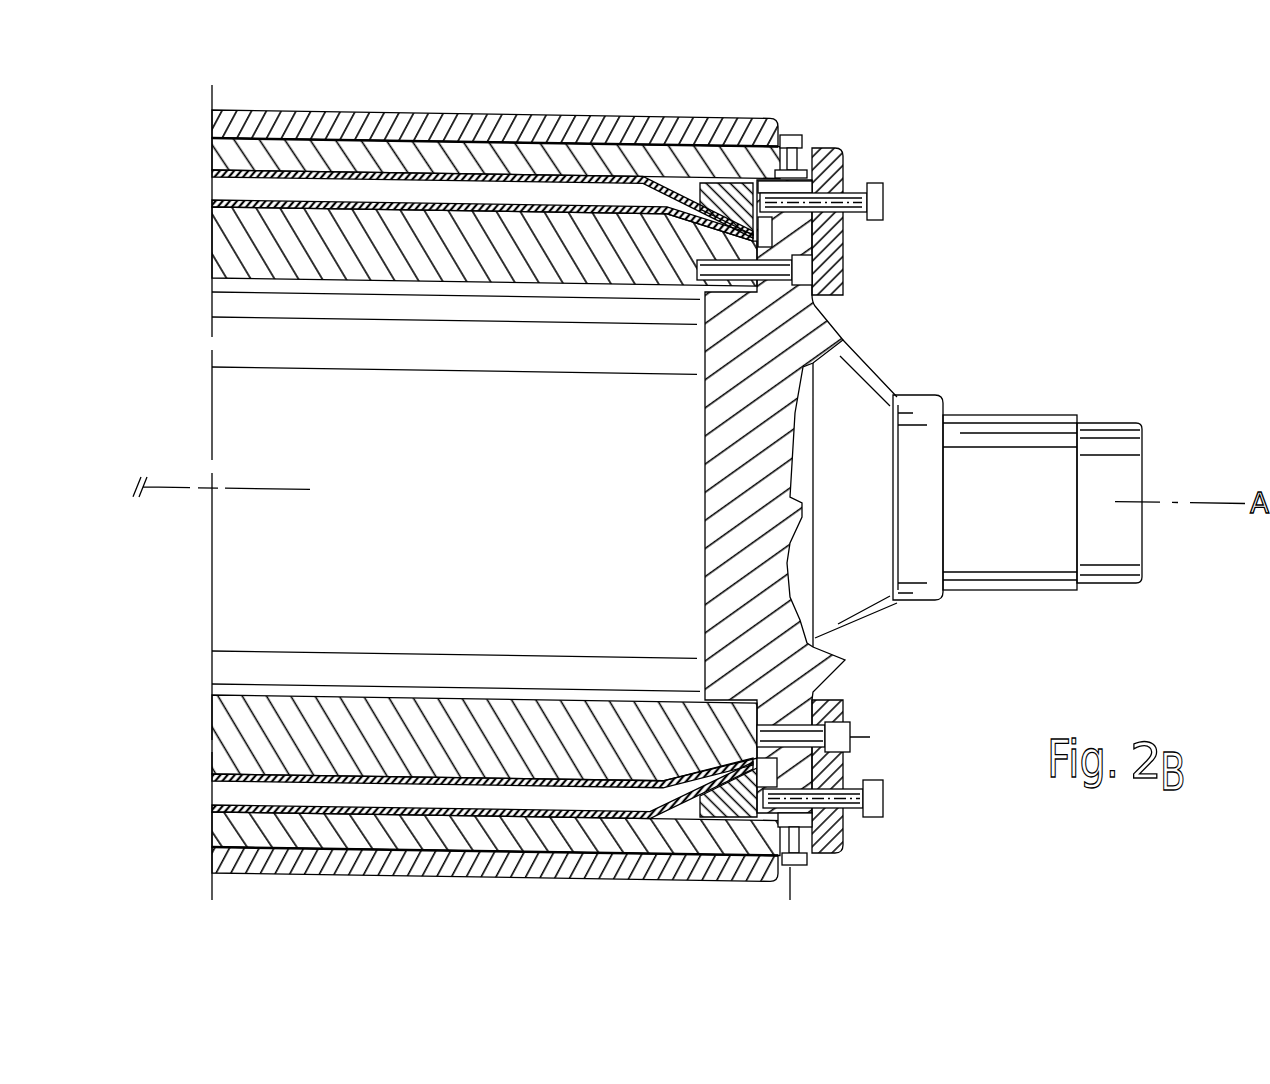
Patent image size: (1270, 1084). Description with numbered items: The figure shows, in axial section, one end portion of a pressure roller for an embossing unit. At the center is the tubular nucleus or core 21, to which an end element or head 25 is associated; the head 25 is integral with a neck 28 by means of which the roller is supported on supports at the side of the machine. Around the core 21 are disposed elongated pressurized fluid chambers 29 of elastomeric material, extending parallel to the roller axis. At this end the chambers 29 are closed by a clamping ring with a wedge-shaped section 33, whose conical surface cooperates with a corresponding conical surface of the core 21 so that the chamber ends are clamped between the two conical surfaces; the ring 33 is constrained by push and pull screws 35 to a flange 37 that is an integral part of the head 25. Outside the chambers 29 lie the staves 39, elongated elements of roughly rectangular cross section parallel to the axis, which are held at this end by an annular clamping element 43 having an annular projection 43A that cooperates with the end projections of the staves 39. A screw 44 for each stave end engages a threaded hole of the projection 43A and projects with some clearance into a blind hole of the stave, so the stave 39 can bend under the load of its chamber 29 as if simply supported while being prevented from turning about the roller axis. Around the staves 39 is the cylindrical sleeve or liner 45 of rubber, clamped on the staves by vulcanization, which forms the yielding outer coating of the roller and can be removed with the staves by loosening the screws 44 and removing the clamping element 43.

The nucleus or core 21 is at (247, 240).
The end element or head 25 is at (716, 453).
The neck 28 is at (1010, 438).
The pressurized fluid chamber 29 is at (227, 188).
The clamping ring with wedge-shaped section 33 is at (733, 183).
The push and pull screw 35 is at (520, 117).
The flange 37 is at (783, 230).
The stave 39 is at (420, 143).
The annular clamping element 43 is at (833, 833).
The annular projection 43A is at (815, 906).
The screw 44 is at (797, 133).
The cylindrical sleeve or liner 45 is at (337, 122).